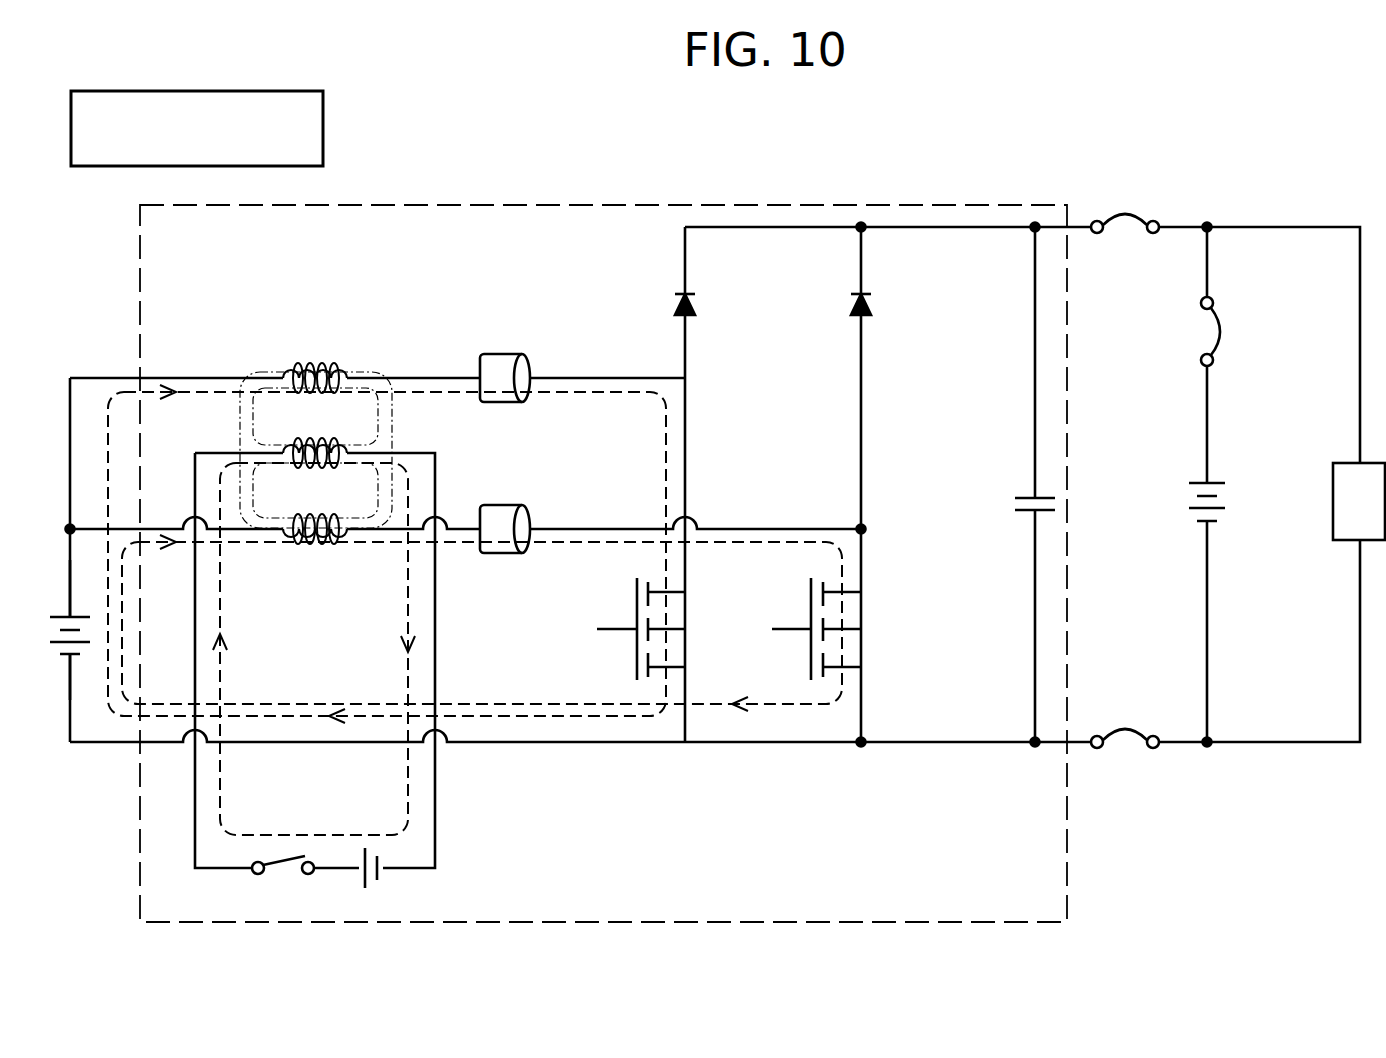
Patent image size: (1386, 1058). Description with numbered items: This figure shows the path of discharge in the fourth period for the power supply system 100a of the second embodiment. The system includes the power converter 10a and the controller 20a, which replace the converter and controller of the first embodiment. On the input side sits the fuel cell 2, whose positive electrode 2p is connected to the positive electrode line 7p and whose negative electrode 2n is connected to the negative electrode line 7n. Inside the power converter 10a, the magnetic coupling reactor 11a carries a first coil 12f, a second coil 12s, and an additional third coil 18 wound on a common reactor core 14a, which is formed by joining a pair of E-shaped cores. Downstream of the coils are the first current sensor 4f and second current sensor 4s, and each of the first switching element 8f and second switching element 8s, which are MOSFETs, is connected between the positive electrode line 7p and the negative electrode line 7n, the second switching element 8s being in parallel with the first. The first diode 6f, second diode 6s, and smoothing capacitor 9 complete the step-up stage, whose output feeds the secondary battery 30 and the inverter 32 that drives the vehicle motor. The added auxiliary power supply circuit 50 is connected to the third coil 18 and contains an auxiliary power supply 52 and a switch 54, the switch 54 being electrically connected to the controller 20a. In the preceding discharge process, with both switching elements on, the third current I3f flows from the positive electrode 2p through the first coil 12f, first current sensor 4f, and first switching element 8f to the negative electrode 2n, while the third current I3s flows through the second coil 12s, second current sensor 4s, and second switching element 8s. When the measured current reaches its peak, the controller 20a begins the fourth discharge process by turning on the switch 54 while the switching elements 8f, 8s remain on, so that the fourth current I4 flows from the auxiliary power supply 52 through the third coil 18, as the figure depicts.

The controller 20a is at (327, 127).
The power converter 10a is at (1017, 204).
The power supply system 100a is at (1253, 162).
The positive electrode line 7p is at (758, 226).
The negative electrode line 7n is at (648, 745).
The first diode 6f is at (695, 300).
The second diode 6s is at (871, 300).
The smoothing capacitor 9 is at (1023, 493).
The secondary battery 30 is at (1194, 478).
The inverter 32 is at (1332, 506).
The third current I3f is at (128, 370).
The third current I3s is at (770, 712).
The fourth current I4 is at (412, 787).
The magnetic coupling reactor 11a is at (361, 454).
The first coil 12f is at (314, 359).
The second coil 12s is at (313, 550).
The third coil 18 is at (348, 435).
The reactor core 14a is at (392, 425).
The first current sensor 4f is at (509, 351).
The second current sensor 4s is at (508, 556).
The first switching element 8f is at (629, 602).
The second switching element 8s is at (804, 602).
The fuel cell 2 is at (80, 645).
The positive electrode 2p is at (68, 610).
The negative electrode 2n is at (70, 655).
The auxiliary power supply circuit 50 is at (373, 681).
The auxiliary power supply 52 is at (369, 848).
The switch 54 is at (288, 860).